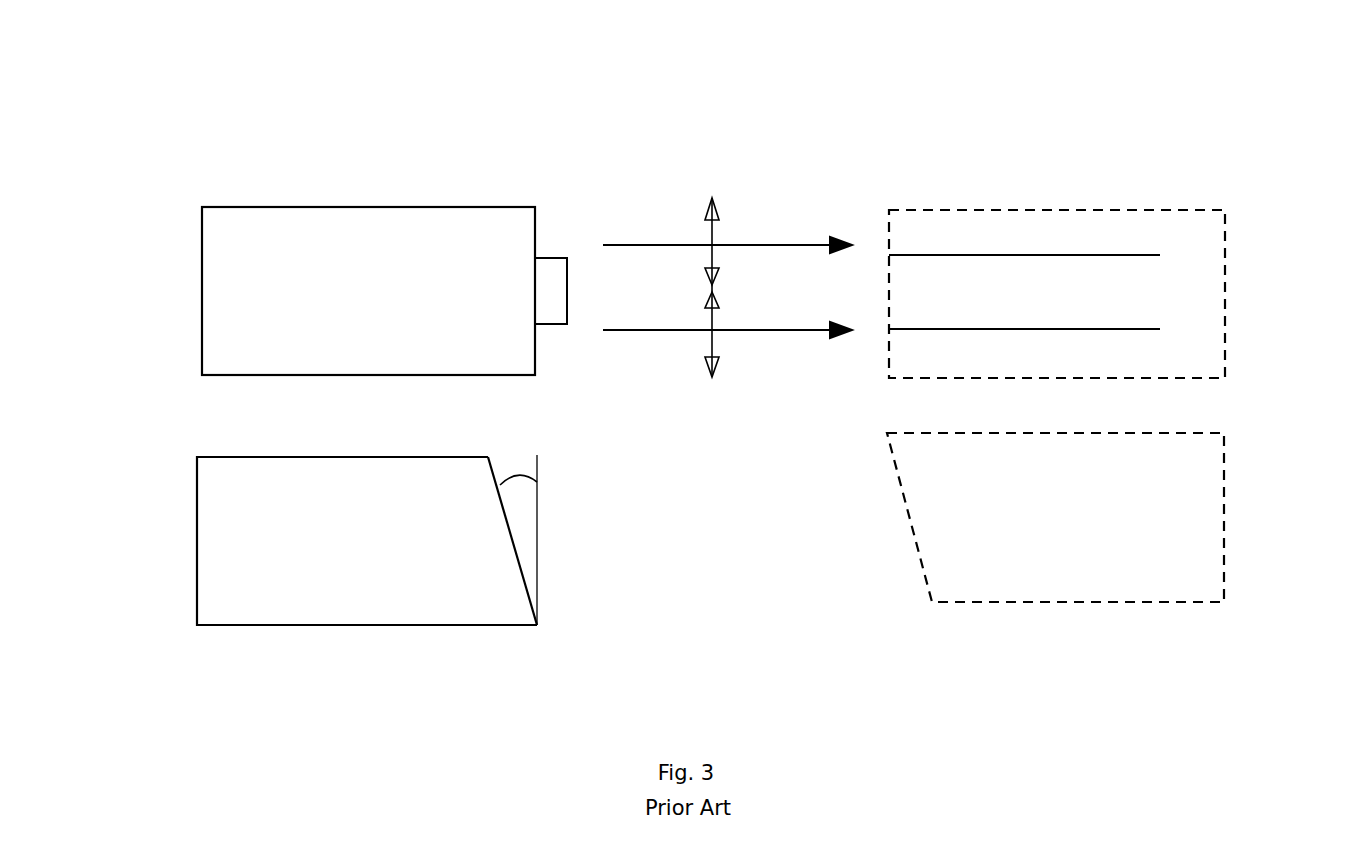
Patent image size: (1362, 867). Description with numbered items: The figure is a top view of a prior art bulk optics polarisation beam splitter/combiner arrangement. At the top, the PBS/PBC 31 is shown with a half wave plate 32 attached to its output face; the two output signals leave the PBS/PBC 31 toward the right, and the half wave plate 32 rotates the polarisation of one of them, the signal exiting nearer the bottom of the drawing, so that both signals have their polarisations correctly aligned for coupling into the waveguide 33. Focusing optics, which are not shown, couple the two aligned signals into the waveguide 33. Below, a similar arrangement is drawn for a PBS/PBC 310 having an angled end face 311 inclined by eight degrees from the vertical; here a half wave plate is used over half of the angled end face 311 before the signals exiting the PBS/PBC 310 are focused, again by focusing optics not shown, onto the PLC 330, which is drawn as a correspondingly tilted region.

The PBS/PBC 31 is at (290, 233).
The half wave plate 32 is at (557, 268).
The waveguide 33 is at (1128, 233).
The PBS/PBC 310 is at (290, 582).
The angled end face 311 is at (519, 543).
The PLC 330 is at (1128, 583).